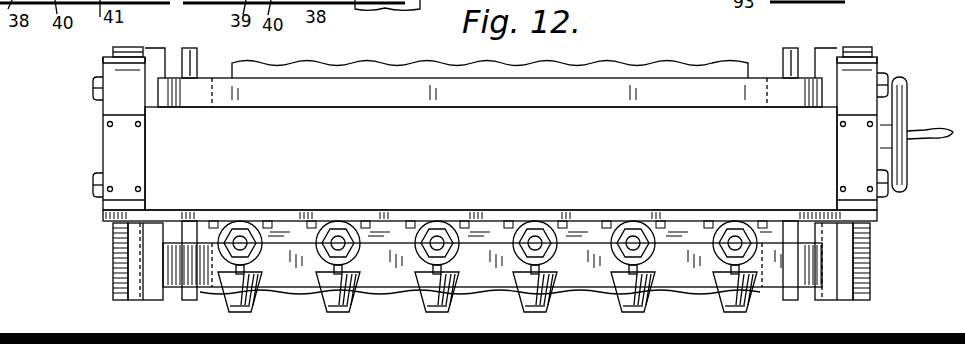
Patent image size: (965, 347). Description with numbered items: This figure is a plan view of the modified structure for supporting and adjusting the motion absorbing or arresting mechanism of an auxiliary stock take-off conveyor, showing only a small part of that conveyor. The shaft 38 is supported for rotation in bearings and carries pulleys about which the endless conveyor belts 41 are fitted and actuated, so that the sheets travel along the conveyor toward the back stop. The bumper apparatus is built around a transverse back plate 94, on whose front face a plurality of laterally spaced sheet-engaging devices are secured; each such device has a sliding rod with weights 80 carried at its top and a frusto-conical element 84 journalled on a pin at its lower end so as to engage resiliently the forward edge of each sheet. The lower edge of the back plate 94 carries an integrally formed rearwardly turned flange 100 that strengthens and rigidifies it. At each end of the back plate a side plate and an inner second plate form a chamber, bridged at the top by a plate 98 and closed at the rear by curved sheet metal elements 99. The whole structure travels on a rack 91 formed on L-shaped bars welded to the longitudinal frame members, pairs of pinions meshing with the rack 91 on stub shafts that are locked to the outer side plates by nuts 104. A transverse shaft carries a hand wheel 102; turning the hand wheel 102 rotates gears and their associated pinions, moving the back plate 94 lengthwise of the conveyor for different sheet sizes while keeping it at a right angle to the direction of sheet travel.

The shaft 38 is at (206, 40).
The conveyor belt 41 is at (408, 86).
The weight 80 is at (506, 223).
The frusto-conical element 84 is at (280, 284).
The rack 91 is at (117, 259).
The back plate 94 is at (279, 219).
The bridging plate 98 is at (114, 152).
The curved sheet metal element 99 is at (115, 69).
The rearwardly turned flange 100 is at (491, 158).
The hand wheel 102 is at (904, 94).
The nut 104 is at (94, 89).